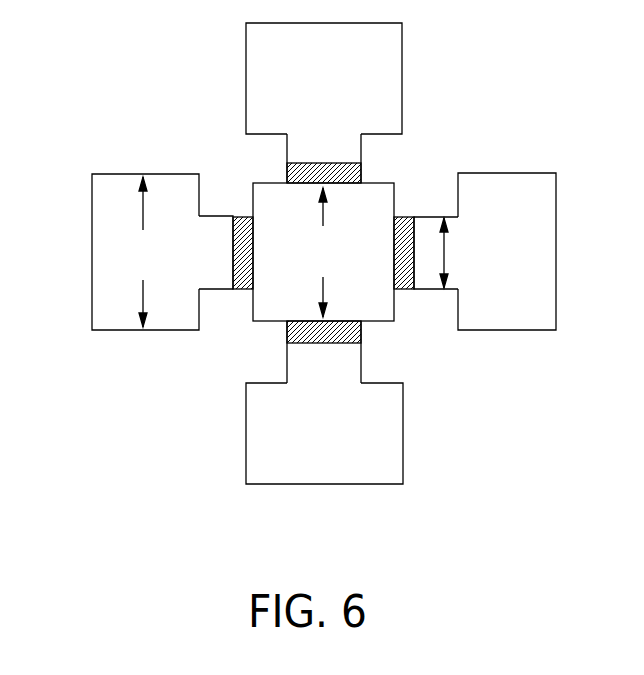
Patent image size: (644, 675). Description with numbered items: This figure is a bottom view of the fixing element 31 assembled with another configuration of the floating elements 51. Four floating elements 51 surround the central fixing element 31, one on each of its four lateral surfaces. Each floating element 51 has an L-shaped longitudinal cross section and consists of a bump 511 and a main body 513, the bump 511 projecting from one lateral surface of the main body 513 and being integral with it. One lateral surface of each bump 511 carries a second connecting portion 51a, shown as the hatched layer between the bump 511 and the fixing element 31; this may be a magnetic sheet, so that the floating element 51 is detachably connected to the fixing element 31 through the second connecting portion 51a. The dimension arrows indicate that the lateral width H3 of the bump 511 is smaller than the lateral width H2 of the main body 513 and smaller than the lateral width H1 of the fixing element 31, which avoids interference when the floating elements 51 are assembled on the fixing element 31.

The fixing element 31 is at (373, 197).
The floating element 51 is at (318, 253).
The bump 511 is at (221, 228).
The main body 513 is at (512, 183).
The second connecting portion 51a is at (233, 290).
The lateral width of the fixing element H1 is at (330, 252).
The lateral width of the main body H2 is at (145, 252).
The lateral width of the bump H3 is at (447, 250).